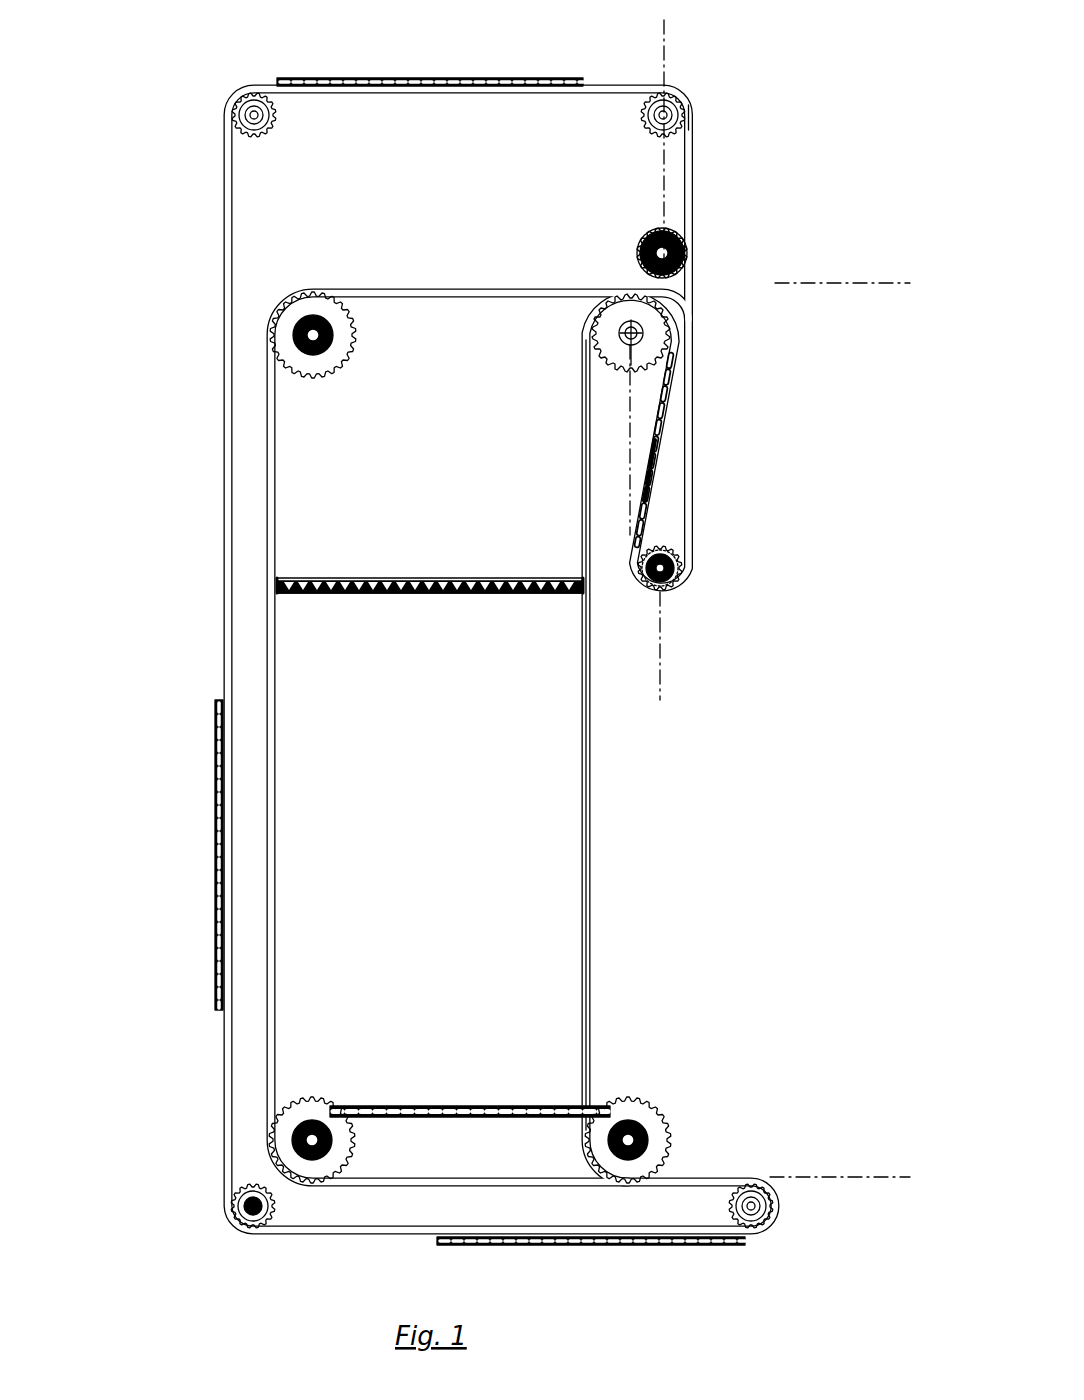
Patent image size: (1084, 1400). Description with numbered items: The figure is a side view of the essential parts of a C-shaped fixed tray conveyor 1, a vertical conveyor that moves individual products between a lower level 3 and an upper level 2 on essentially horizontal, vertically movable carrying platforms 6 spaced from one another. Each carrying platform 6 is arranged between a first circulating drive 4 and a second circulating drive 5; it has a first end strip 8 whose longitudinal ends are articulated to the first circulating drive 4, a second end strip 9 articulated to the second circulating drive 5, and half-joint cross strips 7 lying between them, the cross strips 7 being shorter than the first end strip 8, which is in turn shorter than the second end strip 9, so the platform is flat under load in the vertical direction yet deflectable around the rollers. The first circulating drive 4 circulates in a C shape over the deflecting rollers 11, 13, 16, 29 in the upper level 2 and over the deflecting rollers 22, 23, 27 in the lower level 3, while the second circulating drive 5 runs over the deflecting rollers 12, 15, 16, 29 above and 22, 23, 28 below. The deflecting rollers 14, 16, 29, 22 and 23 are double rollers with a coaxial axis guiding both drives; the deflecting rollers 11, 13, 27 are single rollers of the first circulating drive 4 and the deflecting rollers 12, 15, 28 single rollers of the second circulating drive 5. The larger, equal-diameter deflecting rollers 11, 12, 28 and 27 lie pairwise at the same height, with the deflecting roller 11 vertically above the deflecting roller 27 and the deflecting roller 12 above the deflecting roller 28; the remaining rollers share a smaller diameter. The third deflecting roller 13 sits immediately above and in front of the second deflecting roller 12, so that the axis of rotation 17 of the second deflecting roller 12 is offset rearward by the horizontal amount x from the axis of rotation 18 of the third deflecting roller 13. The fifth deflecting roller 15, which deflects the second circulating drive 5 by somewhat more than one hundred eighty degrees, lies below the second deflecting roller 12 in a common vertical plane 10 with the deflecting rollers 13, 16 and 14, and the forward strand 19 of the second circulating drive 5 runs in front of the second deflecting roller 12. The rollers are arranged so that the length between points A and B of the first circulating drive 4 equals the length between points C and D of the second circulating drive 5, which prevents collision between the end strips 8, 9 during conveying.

The C-shaped fixed tray conveyor 1 is at (157, 180).
The upper level 2 is at (878, 283).
The lower level 3 is at (835, 1177).
The first circulating drive 4 is at (274, 935).
The second circulating drive 5 is at (580, 930).
The carrying platform 6 is at (480, 78).
The half-joint cross strip 7 is at (373, 578).
The first end strip 8 is at (285, 578).
The second end strip 9 is at (578, 578).
The common plane 10 is at (666, 35).
The first deflecting roller 11 is at (302, 312).
The second deflecting roller 12 is at (598, 350).
The third deflecting roller 13 is at (640, 248).
The fourth deflecting roller 14 is at (692, 118).
The fifth deflecting roller 15 is at (672, 590).
The sixth deflecting roller 16 is at (682, 95).
The axis of rotation 17 is at (645, 333).
The axis of rotation 18 is at (690, 232).
The forward strand 19 is at (667, 492).
The deflecting roller 22 is at (236, 1228).
The deflecting roller 23 is at (776, 1206).
The deflecting roller 27 is at (318, 1098).
The deflecting roller 28 is at (655, 1100).
The deflecting roller 29 is at (240, 88).